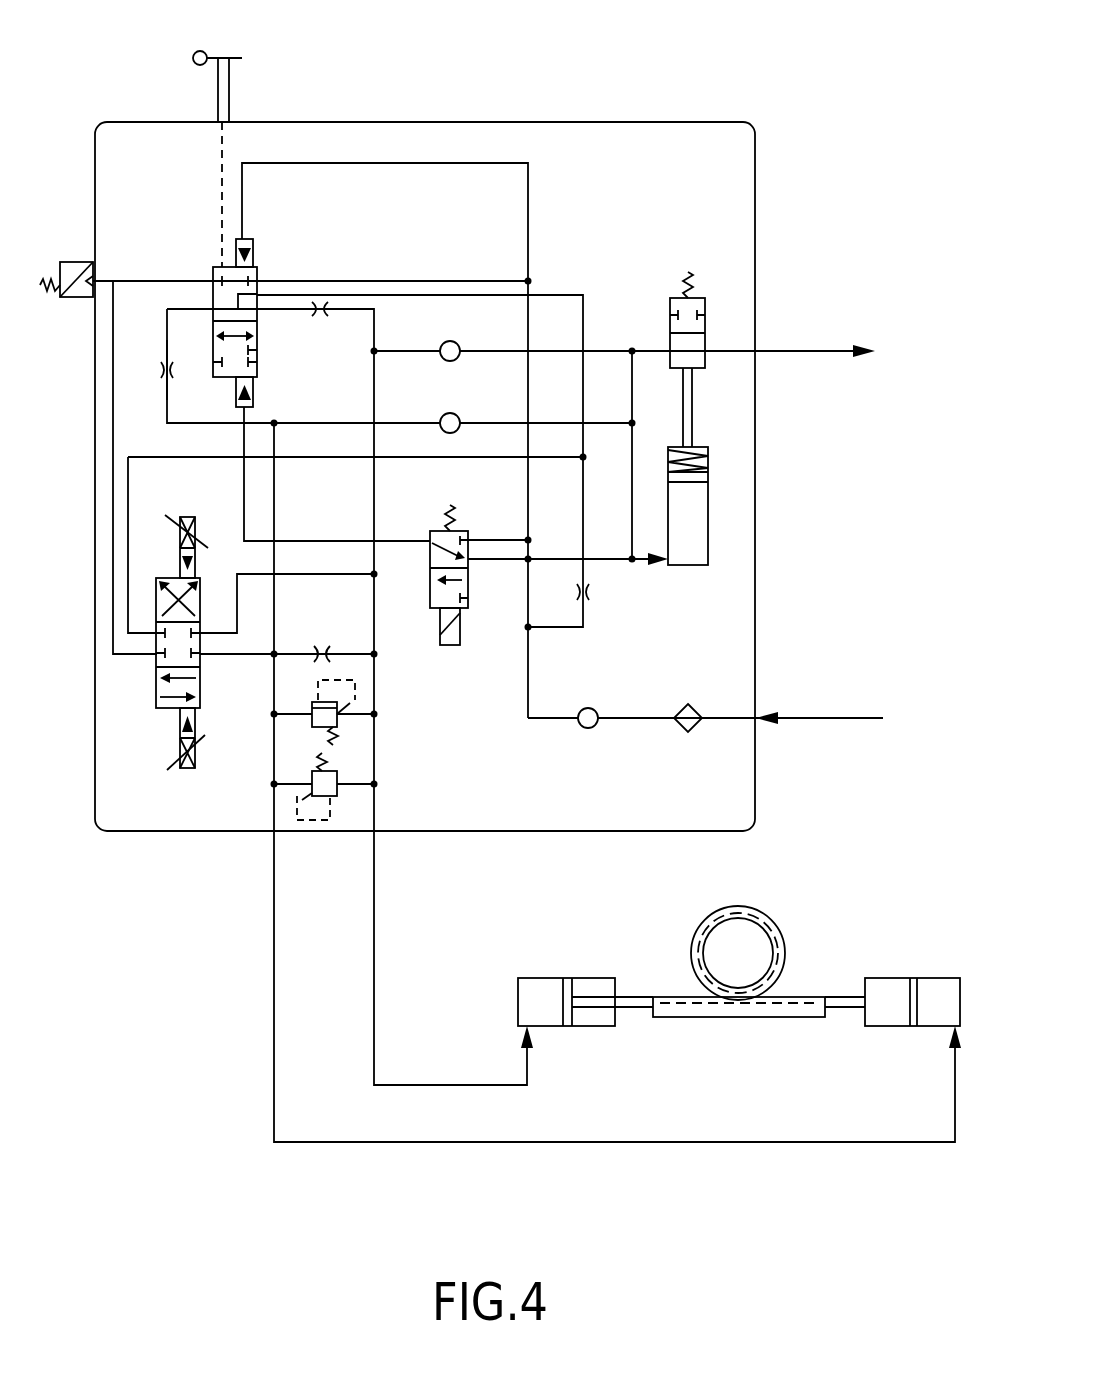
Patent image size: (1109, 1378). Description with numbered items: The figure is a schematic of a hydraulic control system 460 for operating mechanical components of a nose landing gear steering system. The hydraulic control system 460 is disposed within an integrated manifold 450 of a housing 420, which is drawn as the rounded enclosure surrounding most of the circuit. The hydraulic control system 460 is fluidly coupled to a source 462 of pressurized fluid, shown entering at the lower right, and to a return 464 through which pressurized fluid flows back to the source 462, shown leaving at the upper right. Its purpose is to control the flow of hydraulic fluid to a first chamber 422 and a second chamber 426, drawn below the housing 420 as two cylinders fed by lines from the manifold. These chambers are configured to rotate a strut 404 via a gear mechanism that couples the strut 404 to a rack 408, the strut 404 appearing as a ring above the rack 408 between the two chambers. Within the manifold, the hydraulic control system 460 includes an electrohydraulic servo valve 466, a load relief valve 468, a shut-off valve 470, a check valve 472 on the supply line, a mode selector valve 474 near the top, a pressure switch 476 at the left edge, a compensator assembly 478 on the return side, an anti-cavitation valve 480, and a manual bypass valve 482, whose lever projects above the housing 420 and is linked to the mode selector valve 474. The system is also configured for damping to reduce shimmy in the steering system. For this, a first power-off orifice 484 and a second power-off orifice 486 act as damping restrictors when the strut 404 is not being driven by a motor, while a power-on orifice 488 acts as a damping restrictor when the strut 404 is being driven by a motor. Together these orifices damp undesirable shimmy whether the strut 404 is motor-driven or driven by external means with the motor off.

The strut 404 is at (782, 945).
The rack 408 is at (722, 1010).
The housing 420 is at (755, 178).
The first chamber 422 is at (538, 990).
The second chamber 426 is at (942, 988).
The integrated manifold 450 is at (650, 148).
The hydraulic control system 460 is at (460, 88).
The source of pressurized fluid 462 is at (822, 718).
The return 464 is at (820, 350).
The electrohydraulic servo valve 466 is at (153, 688).
The load relief valve 468 is at (352, 717).
The shut-off valve 470 is at (450, 645).
The check valve 472 is at (588, 728).
The mode selector valve 474 is at (265, 268).
The pressure switch 476 is at (77, 262).
The compensator assembly 478 is at (676, 295).
The anti-cavitation valve 480 is at (458, 345).
The manual bypass valve 482 is at (223, 87).
The first power-off orifice 484 is at (320, 316).
The second power-off orifice 486 is at (155, 364).
The power-on orifice 488 is at (328, 645).